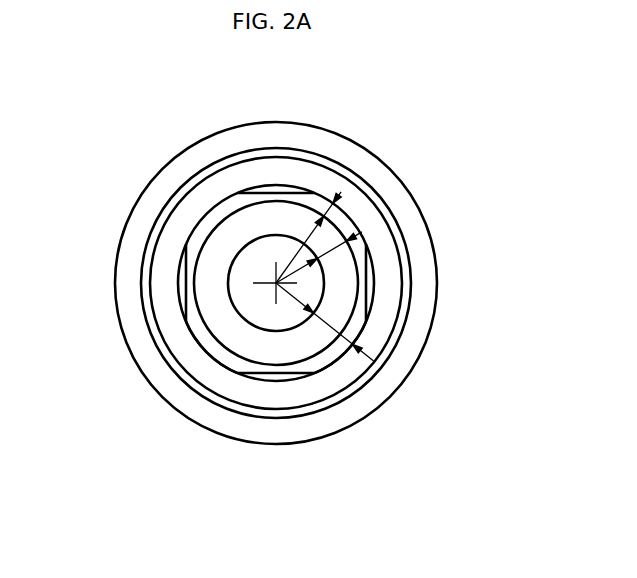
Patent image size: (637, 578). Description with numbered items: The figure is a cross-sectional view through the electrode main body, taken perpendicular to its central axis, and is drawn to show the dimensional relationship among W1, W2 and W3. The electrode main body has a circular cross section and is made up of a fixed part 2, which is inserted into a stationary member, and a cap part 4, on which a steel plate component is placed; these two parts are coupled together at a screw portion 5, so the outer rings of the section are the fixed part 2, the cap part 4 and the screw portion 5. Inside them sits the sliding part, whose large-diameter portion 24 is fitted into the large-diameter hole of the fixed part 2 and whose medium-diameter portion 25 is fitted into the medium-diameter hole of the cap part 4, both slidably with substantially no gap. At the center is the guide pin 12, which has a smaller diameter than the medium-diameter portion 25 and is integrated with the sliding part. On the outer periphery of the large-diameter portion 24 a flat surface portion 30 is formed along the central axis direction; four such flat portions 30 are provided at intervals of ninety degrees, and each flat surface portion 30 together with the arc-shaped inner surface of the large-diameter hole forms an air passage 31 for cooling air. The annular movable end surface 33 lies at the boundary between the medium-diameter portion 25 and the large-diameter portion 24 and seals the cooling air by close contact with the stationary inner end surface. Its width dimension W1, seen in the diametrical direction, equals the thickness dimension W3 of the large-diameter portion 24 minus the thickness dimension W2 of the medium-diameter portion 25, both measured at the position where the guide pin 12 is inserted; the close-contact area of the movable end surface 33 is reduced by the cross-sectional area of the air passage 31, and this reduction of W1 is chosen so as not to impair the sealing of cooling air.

The fixed part 2 is at (170, 332).
The cap part 4 is at (178, 172).
The screw portion 5 is at (156, 228).
The guide pin 12 is at (290, 320).
The large-diameter portion 24 is at (203, 350).
The medium-diameter portion 25 is at (233, 357).
The flat surface portion 30 is at (267, 377).
The air passage 31 is at (185, 283).
The movable end surface 33 is at (337, 353).
The width dimension of the movable end surface W1 is at (333, 203).
The thickness dimension of the medium-diameter portion W2 is at (341, 250).
The thickness dimension of the large-diameter portion W3 is at (334, 324).